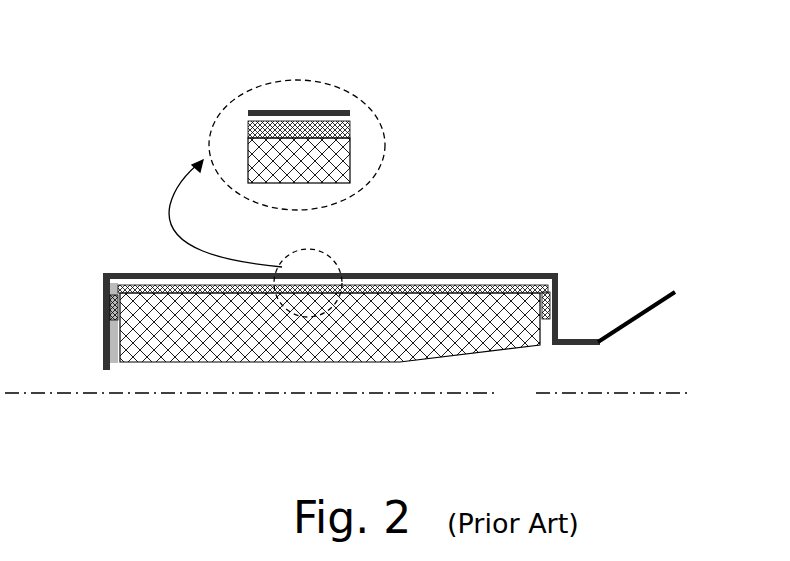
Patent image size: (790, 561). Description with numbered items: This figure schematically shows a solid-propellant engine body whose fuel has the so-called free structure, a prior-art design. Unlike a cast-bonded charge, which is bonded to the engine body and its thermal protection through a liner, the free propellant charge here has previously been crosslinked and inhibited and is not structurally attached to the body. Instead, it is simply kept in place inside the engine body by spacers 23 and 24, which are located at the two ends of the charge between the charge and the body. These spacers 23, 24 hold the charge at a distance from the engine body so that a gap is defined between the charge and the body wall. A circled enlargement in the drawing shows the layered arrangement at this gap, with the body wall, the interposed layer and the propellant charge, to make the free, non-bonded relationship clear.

The spacer 23 is at (76, 276).
The spacer 24 is at (608, 297).